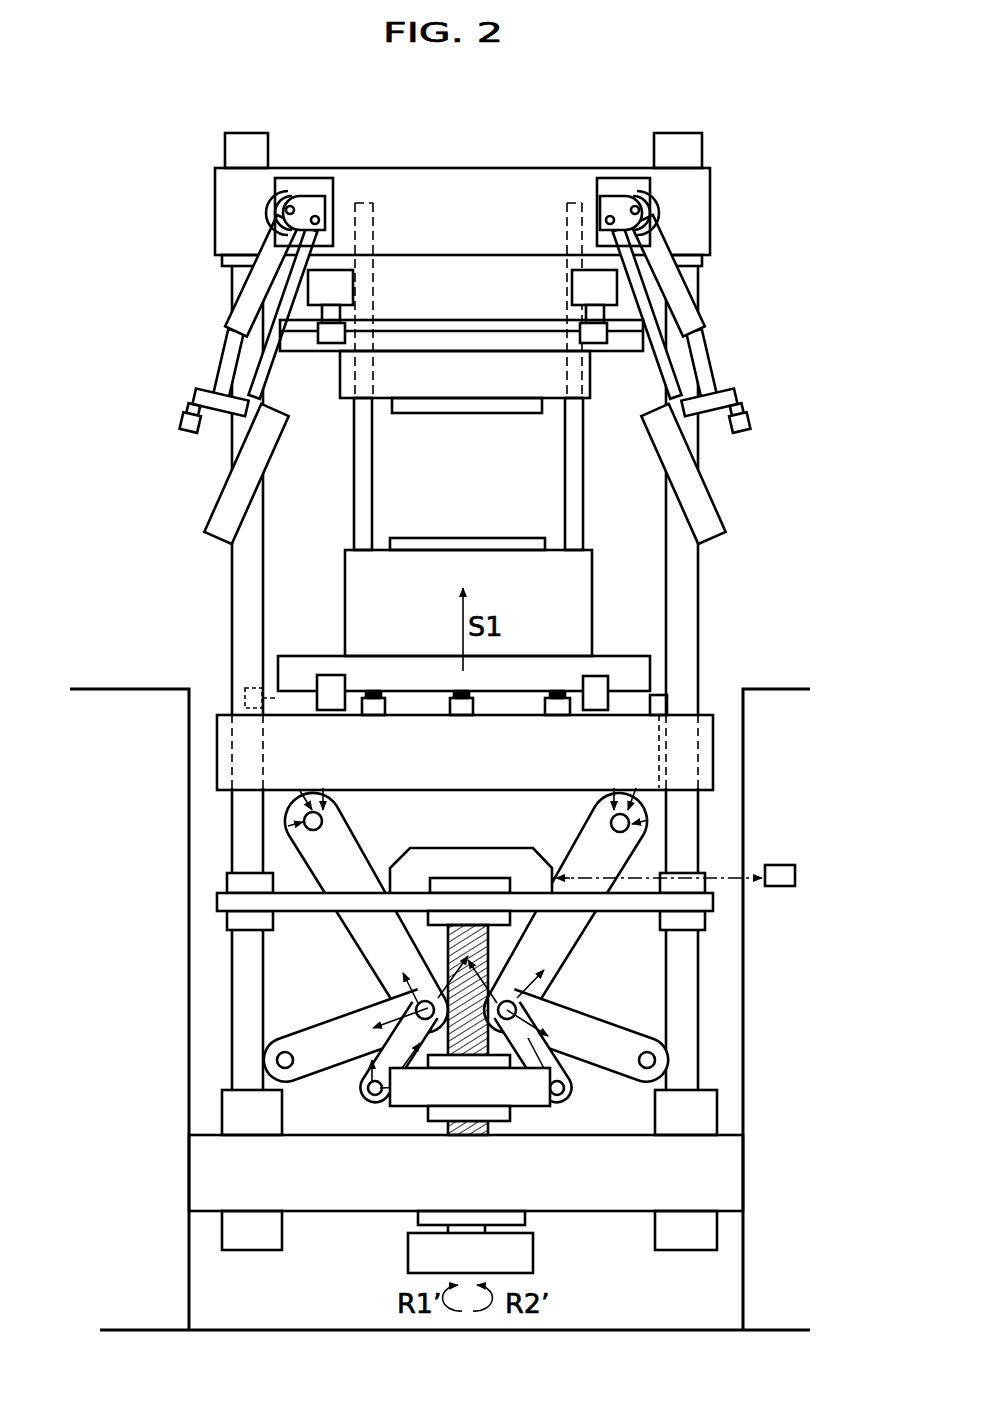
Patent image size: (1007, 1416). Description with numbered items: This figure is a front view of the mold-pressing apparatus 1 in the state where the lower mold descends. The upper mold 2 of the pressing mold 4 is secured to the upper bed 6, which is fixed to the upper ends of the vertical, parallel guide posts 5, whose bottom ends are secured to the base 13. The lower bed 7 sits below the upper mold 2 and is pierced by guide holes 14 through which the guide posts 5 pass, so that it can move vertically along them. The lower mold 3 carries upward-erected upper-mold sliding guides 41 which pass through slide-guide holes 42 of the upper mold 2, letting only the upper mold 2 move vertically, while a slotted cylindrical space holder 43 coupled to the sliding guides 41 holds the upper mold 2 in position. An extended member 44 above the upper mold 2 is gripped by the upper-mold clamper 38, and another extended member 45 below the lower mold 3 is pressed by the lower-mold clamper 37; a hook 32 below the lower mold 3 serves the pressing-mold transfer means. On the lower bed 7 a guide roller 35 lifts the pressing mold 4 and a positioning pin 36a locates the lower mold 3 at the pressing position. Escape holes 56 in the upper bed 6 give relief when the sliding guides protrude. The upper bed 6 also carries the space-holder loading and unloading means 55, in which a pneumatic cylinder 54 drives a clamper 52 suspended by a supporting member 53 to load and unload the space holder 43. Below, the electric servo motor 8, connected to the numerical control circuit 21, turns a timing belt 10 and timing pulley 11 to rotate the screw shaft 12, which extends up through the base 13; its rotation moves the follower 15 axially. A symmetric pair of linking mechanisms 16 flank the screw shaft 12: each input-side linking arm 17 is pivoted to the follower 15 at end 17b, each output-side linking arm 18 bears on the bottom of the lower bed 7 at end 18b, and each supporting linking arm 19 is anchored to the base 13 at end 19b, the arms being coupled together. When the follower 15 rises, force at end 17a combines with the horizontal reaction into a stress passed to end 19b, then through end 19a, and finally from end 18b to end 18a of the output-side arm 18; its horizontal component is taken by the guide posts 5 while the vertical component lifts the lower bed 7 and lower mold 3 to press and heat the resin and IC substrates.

The mold-pressing apparatus 1 is at (546, 147).
The upper mold 2 is at (548, 410).
The lower mold 3 is at (548, 547).
The pressing mold 4 is at (610, 432).
The guide posts 5 is at (232, 614).
The upper bed 6 is at (698, 228).
The lower bed 7 is at (699, 724).
The electric servo motor 8 is at (492, 851).
The timing belt 10 is at (533, 1262).
The timing pulley 11 is at (528, 1232).
The screw shaft 12 is at (464, 1023).
The base 13 is at (304, 1200).
The guide holes 14 is at (240, 790).
The follower 15 is at (425, 1110).
The linking mechanism 16 is at (398, 941).
The input-side linking arm 17 is at (626, 925).
The end of input-side linking arm 17a is at (560, 1098).
The end of input-side linking arm 17b is at (352, 928).
The output-side linking arm 18 is at (575, 950).
The end of output-side linking arm 18a is at (565, 913).
The end of output-side linking arm 18b is at (366, 913).
The supporting linking arm 19 is at (555, 985).
The end of supporting linking arm 19a is at (648, 1046).
The end of supporting linking arm 19b is at (366, 1027).
The numerical control circuit 21 is at (821, 861).
The hook 32 is at (245, 696).
The guide roller 35 is at (374, 717).
The positioning pin 36a is at (658, 697).
The lower-mold clamper 37 is at (330, 712).
The upper-mold clamper 38 is at (338, 292).
The upper-mold sliding guides 41 is at (372, 450).
The slide-guide holes 42 is at (366, 378).
The cylindrical space holder 43 is at (218, 500).
The extended member 44 is at (468, 330).
The extended member 45 is at (418, 708).
The clamper 52 is at (186, 426).
The supporting member 53 is at (244, 386).
The pneumatic cylinder 54 is at (231, 332).
The space-holder loading and unloading means 55 is at (151, 331).
The escape holes 56 is at (373, 214).